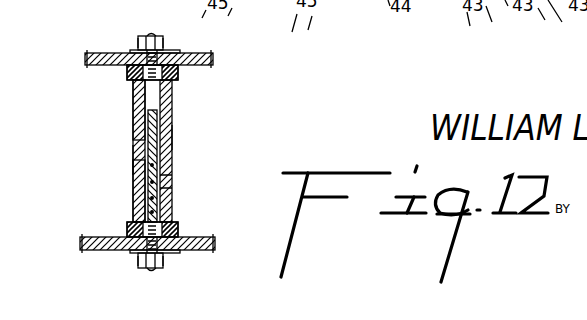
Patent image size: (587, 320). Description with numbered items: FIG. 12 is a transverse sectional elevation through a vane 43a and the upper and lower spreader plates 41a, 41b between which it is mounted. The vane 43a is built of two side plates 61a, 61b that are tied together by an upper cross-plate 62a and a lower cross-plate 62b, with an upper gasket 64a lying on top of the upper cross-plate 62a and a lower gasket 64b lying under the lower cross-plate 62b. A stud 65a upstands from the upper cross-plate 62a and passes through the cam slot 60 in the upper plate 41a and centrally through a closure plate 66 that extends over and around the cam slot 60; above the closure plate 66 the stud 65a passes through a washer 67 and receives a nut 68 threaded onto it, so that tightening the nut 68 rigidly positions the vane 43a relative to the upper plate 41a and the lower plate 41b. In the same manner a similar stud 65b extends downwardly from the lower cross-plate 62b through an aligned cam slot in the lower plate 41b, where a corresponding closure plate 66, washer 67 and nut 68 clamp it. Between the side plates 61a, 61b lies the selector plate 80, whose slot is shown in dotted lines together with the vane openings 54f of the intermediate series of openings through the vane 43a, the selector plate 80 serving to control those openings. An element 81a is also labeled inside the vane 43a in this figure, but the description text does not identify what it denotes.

The upper spreader plate 41a is at (87, 52).
The lower spreader plate 41b is at (203, 236).
The vane 43a is at (178, 130).
The vane opening 54f is at (173, 182).
The cam slot 60 is at (176, 53).
The side plate 61a is at (133, 174).
The side plate 61b is at (173, 140).
The upper cross-plate 62a is at (134, 99).
The lower cross-plate 62b is at (134, 212).
The upper gasket 64a is at (179, 73).
The lower gasket 64b is at (186, 228).
The stud 65a is at (152, 34).
The stud 65b is at (147, 271).
The closure plate 66 is at (131, 50).
The washer 67 is at (164, 48).
The nut 68 is at (136, 48).
The selector plate 80 is at (168, 160).
The inner rod 81a is at (148, 131).